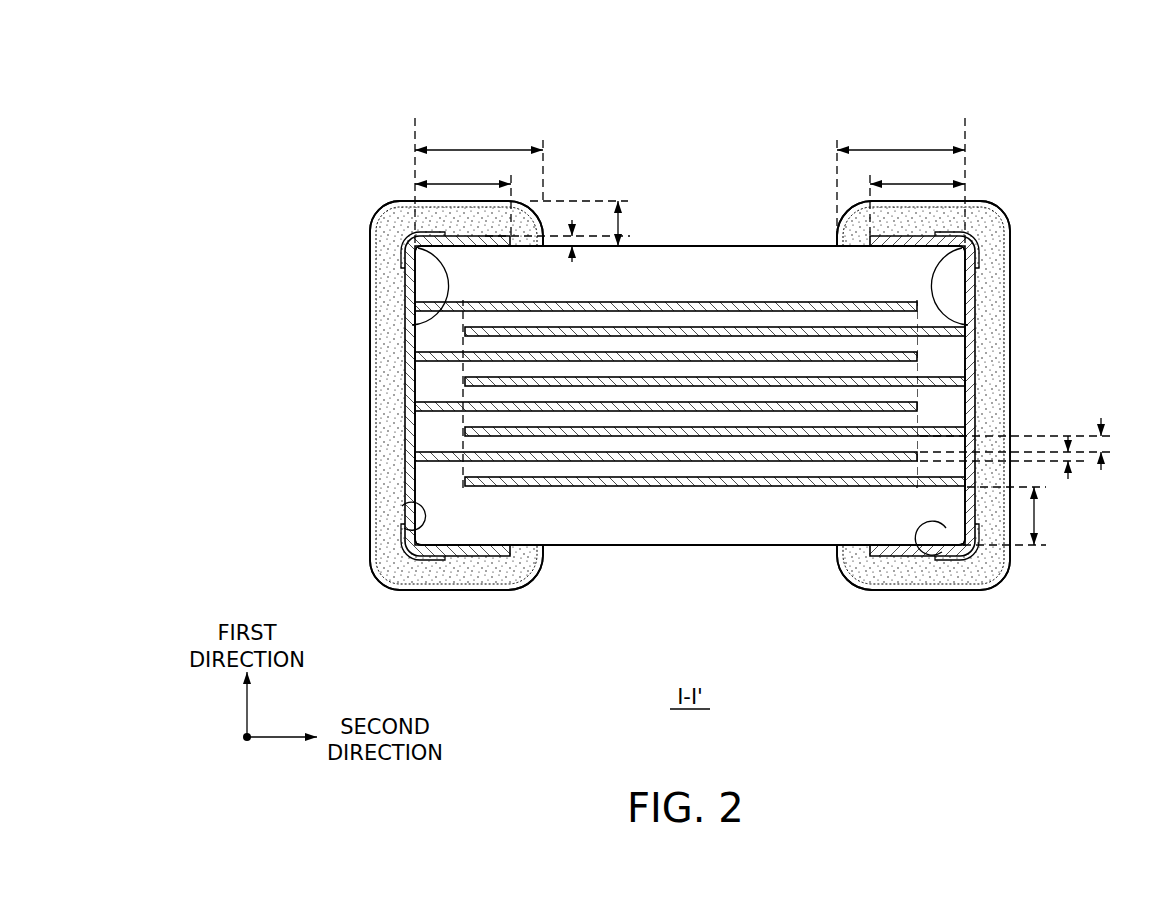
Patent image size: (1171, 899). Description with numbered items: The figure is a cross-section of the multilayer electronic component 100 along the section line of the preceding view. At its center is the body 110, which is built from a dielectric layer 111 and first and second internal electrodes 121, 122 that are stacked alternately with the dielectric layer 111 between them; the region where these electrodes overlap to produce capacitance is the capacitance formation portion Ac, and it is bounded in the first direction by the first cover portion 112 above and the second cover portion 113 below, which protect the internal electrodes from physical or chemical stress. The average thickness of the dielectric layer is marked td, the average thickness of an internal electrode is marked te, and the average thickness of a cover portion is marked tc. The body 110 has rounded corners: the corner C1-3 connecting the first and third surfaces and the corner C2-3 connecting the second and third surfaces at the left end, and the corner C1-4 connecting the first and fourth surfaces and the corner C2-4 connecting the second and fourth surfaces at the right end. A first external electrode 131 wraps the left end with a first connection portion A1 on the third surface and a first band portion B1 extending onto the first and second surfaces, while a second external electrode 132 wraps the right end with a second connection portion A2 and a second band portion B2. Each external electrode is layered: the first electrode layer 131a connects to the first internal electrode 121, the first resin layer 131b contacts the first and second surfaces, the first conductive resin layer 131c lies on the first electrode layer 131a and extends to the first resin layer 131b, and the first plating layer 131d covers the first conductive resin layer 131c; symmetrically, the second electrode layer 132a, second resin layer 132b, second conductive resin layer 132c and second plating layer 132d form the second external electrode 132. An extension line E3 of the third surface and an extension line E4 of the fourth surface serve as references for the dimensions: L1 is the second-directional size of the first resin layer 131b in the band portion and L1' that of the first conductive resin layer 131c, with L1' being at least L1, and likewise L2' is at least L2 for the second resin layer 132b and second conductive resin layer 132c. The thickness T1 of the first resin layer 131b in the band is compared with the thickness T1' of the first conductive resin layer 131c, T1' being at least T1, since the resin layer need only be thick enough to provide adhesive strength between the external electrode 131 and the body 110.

The multilayer electronic component 100 is at (357, 33).
The body 110 is at (710, 246).
The dielectric layer 111 is at (678, 320).
The first cover portion 112 is at (742, 265).
The second cover portion 113 is at (658, 530).
The first internal electrode 121 is at (778, 301).
The second internal electrode 122 is at (808, 330).
The first external electrode 131 is at (288, 220).
The first electrode layer 131a is at (408, 276).
The first resin layer 131b is at (420, 230).
The first conductive resin layer 131c is at (388, 293).
The first plating layer 131d is at (375, 315).
The second external electrode 132 is at (1093, 220).
The second electrode layer 132a is at (972, 278).
The second resin layer 132b is at (980, 228).
The second conductive resin layer 132c is at (993, 293).
The second plating layer 132d is at (1005, 315).
The 1-3-th corner C1-3 is at (425, 338).
The 1-4-th corner C1-4 is at (960, 340).
The 2-3-th corner C2-3 is at (402, 506).
The 2-4-th corner C2-4 is at (942, 552).
The first connection portion A1 is at (333, 396).
The second connection portion A2 is at (1044, 397).
The first band portion B1 is at (451, 93).
The second band portion B2 is at (924, 93).
The extension line of the third surface E3 is at (413, 134).
The extension line of the fourth surface E4 is at (968, 134).
The second-directional size of the first resin layer L1 is at (463, 197).
The second-directional size of the first conductive resin layer L1' is at (479, 163).
The second-directional size of the second resin layer L2 is at (917, 197).
The second-directional size of the second conductive resin layer L2' is at (901, 185).
The average thickness of the first resin layer T1 is at (557, 241).
The average thickness of the first conductive resin layer T1' is at (595, 223).
The average thickness of the dielectric layer td is at (1024, 444).
The average thickness of the internal electrode te is at (1071, 464).
The average thickness of the cover portion tc is at (1000, 516).
The capacitance formation portion Ac is at (727, 490).